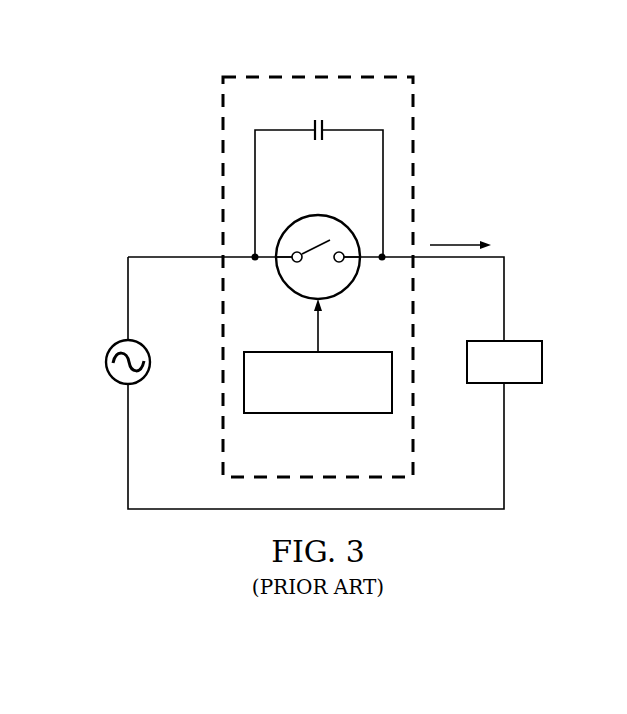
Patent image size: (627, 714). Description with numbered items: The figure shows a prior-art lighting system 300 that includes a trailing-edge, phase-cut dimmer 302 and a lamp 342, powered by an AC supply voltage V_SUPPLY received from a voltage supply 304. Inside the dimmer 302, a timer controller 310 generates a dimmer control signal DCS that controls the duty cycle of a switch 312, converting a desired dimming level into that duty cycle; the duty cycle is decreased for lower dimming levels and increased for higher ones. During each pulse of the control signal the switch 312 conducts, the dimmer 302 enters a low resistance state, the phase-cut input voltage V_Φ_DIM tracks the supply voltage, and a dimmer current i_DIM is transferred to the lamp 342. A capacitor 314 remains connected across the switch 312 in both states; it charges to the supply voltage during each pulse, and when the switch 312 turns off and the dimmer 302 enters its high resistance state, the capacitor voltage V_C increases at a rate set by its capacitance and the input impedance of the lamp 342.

The lighting system 300 is at (151, 100).
The trailing-edge phase-cut dimmer 302 is at (302, 70).
The voltage supply 304 is at (106, 362).
The timer controller 310 is at (306, 415).
The switch 312 is at (301, 218).
The capacitor 314 is at (322, 143).
The lamp 342 is at (543, 362).